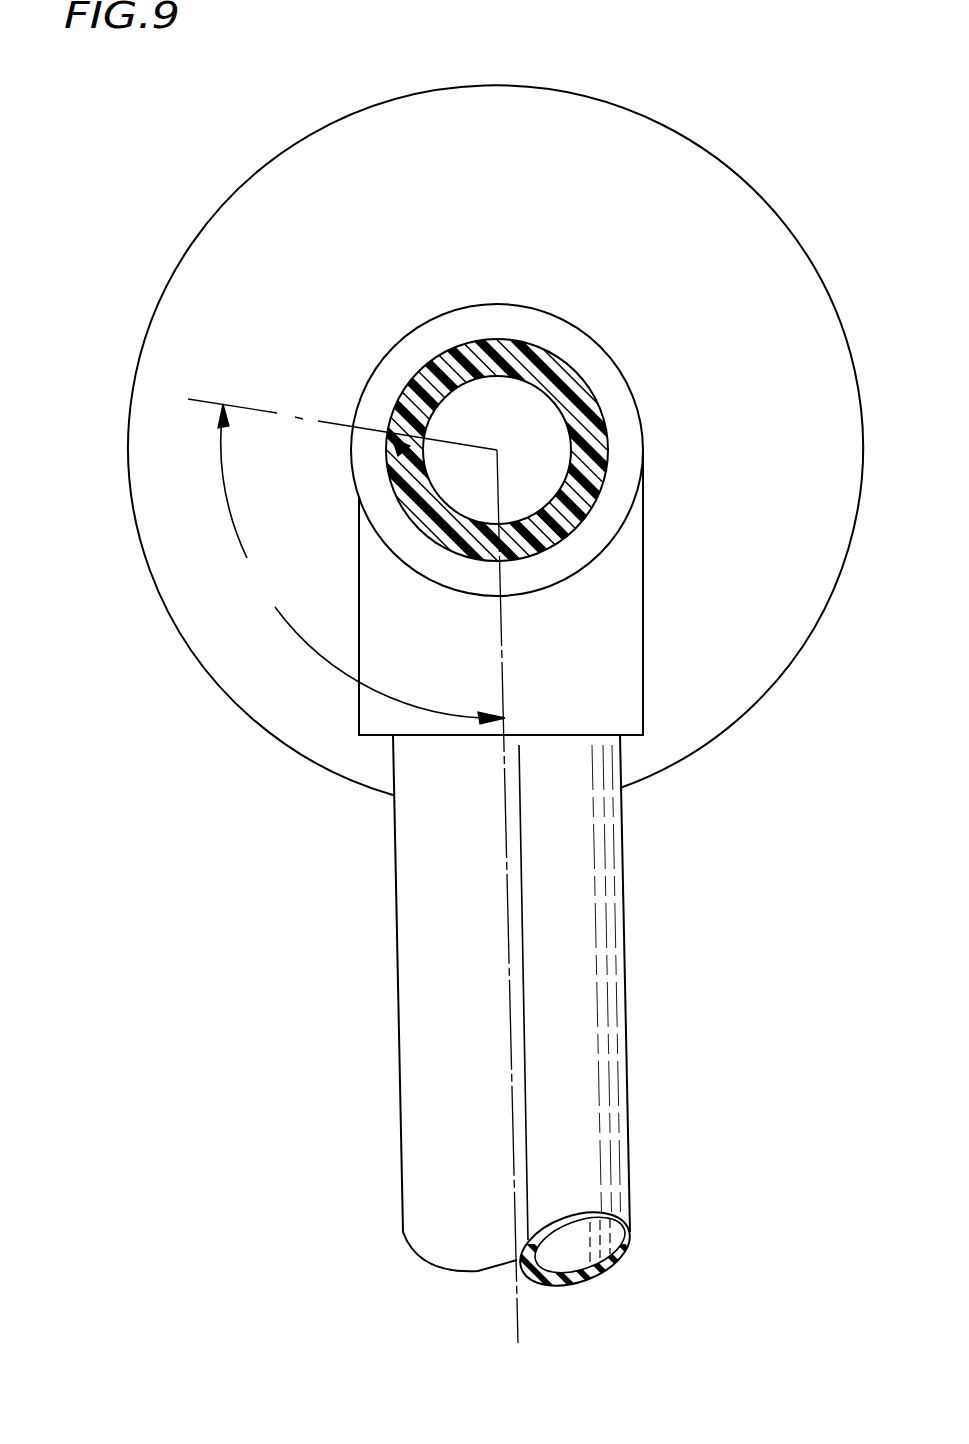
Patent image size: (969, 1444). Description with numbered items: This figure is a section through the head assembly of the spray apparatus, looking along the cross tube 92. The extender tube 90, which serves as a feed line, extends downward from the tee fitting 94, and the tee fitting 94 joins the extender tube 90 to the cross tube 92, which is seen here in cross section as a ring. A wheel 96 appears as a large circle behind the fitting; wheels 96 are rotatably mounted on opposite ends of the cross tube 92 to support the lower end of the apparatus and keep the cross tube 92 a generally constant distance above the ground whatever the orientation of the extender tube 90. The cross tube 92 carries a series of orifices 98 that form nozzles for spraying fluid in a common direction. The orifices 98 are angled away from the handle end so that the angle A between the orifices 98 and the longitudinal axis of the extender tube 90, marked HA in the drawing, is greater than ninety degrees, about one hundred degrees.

The extender tube 90 is at (398, 1005).
The cross tube 92 is at (535, 345).
The tee fitting 94 is at (452, 306).
The wheel 96 is at (270, 157).
The orifice 98 is at (356, 396).
The angle A is at (361, 564).
The hinge axis HA is at (518, 1318).